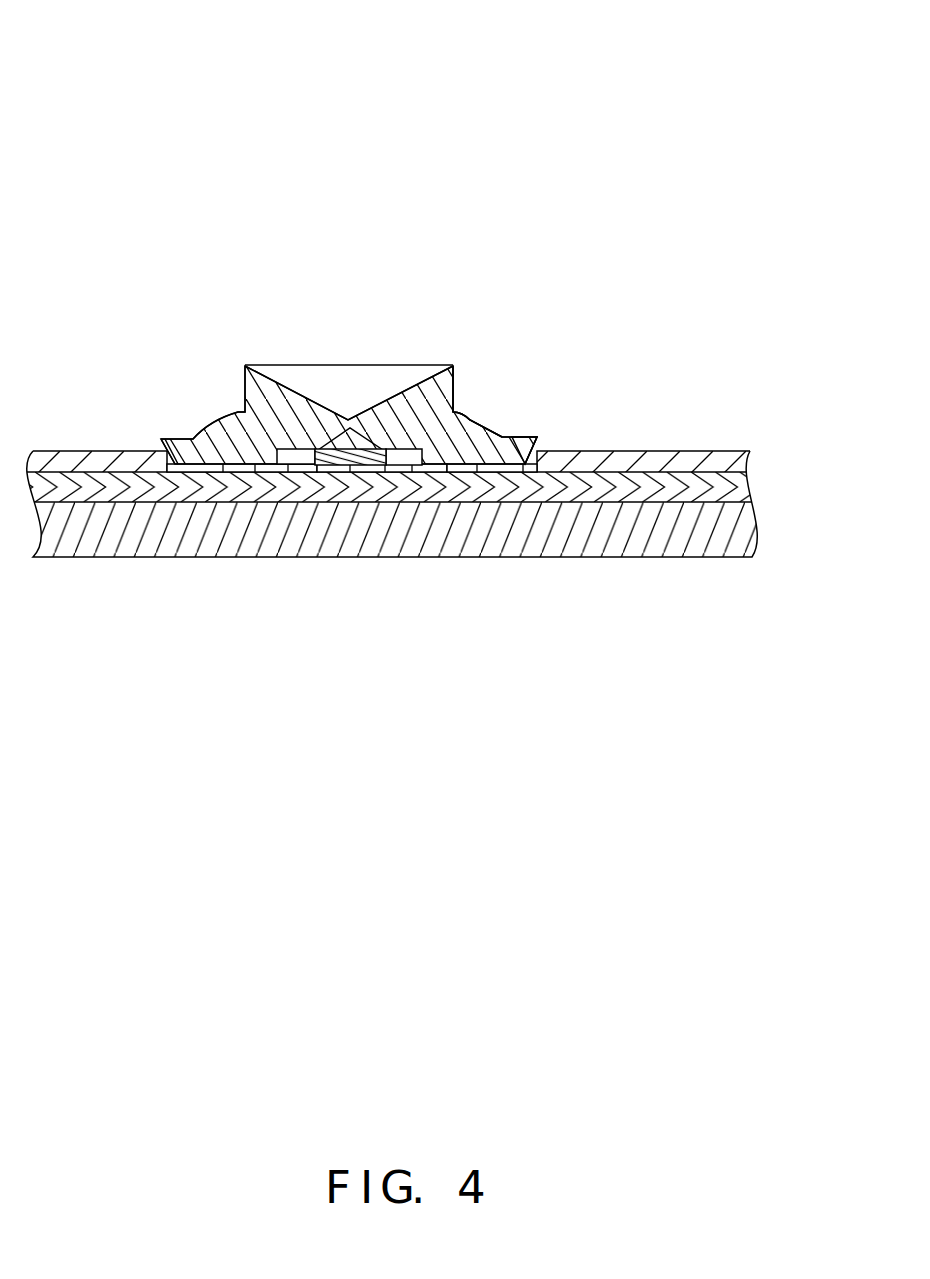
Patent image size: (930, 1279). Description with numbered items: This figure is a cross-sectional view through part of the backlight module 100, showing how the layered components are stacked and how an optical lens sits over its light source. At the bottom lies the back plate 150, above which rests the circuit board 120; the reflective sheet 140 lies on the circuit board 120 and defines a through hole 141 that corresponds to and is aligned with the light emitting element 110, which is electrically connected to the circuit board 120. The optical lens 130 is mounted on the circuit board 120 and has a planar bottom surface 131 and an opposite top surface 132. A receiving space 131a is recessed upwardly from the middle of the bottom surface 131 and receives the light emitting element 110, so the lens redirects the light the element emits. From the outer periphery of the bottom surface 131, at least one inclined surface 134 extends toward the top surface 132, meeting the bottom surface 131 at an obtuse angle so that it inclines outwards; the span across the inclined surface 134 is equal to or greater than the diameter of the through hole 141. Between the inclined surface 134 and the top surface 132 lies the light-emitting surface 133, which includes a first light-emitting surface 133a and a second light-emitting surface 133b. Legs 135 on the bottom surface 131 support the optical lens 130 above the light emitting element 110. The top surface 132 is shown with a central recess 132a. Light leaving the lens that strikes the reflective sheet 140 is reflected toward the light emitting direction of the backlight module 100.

The backlight module 100 is at (232, 60).
The light emitting element 110 is at (360, 462).
The circuit board 120 is at (733, 495).
The optical lens 130 is at (230, 443).
The bottom surface 131 is at (457, 470).
The receiving space 131a is at (288, 452).
The top surface 132 is at (410, 381).
The recess of encapsulant 132a is at (317, 389).
The light-emitting surface 133 is at (533, 333).
The first light-emitting surface 133a is at (457, 380).
The second light-emitting surface 133b is at (470, 413).
The inclined surface 134 is at (563, 449).
The legs 135 is at (245, 468).
The reflective sheet 140 is at (732, 465).
The through hole 141 is at (497, 474).
The back plate 150 is at (750, 545).